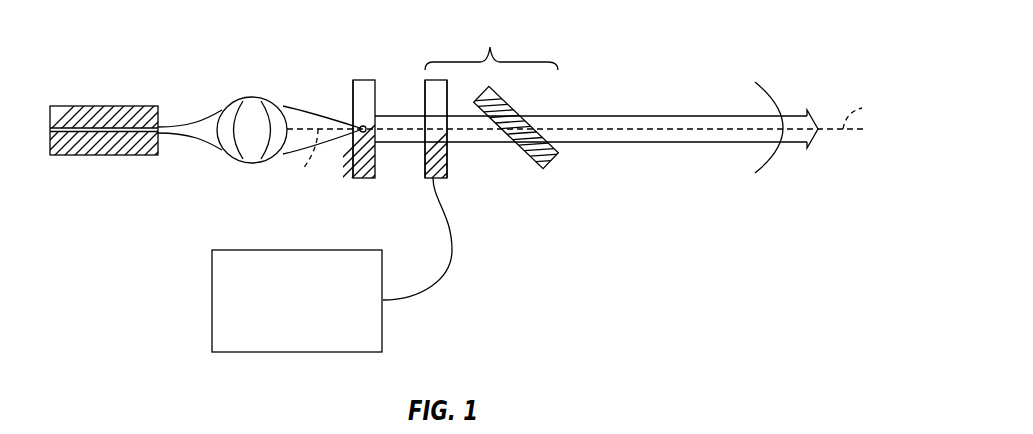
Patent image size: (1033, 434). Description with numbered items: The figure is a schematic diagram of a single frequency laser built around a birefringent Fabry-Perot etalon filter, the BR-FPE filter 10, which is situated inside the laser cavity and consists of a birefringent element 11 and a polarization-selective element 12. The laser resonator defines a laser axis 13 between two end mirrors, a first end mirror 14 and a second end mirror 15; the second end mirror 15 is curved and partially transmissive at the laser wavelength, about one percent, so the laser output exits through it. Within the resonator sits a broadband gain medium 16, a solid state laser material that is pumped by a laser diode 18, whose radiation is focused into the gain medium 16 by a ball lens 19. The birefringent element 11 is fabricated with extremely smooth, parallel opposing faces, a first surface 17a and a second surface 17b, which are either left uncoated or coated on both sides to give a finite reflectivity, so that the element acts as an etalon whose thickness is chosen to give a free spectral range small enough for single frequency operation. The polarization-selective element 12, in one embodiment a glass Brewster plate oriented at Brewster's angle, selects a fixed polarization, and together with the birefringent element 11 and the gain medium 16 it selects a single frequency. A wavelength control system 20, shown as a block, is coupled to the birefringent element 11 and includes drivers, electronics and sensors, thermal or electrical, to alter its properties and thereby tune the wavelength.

The BR-FPE filter 10 is at (491, 45).
The birefringent element 11 is at (438, 182).
The polarization-selective element 12 is at (545, 166).
The laser axis 13 is at (590, 153).
The first end mirror 14 is at (353, 86).
The second end mirror 15 is at (776, 97).
The broadband gain medium 16 is at (363, 80).
The first surface 17a is at (423, 180).
The second surface 17b is at (447, 165).
The laser diode 18 is at (98, 106).
The ball lens 19 is at (253, 97).
The wavelength control system 20 is at (252, 250).